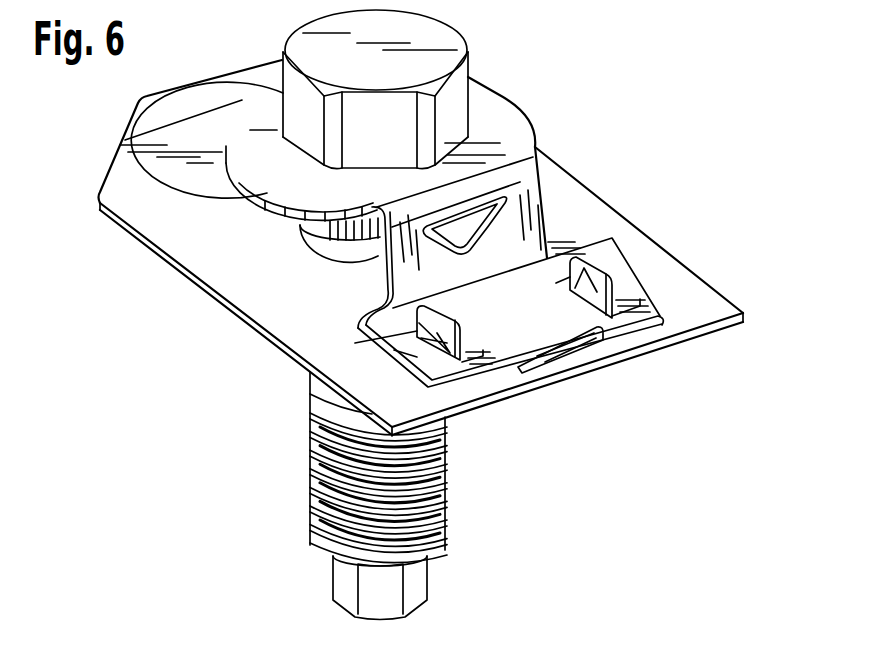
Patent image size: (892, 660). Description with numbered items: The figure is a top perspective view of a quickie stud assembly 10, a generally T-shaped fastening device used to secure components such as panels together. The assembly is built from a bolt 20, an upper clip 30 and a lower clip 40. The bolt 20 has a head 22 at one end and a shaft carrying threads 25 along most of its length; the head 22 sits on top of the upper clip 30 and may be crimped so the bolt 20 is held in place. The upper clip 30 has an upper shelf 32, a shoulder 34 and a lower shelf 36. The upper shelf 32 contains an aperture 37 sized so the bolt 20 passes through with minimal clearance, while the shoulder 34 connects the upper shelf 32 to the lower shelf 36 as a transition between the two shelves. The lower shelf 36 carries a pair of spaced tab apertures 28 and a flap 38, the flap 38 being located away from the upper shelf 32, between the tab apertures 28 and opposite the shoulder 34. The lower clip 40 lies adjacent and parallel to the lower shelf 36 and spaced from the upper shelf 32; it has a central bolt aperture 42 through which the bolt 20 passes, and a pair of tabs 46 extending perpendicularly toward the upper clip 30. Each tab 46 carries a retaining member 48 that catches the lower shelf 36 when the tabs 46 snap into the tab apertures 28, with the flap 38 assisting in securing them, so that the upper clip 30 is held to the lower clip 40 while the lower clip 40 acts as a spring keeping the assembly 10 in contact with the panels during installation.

The quickie stud assembly 10 is at (617, 88).
The bolt 20 is at (372, 496).
The head 22 is at (436, 33).
The threads 25 is at (440, 512).
The tab aperture 28 is at (632, 292).
The upper clip 30 is at (268, 152).
The upper shelf 32 is at (507, 116).
The shoulder 34 is at (457, 260).
The lower shelf 36 is at (595, 372).
The aperture 37 is at (365, 175).
The flap 38 is at (594, 332).
The lower clip 40 is at (416, 291).
The bolt aperture 42 is at (312, 240).
The tab 46 is at (465, 333).
The retaining member 48 is at (585, 272).